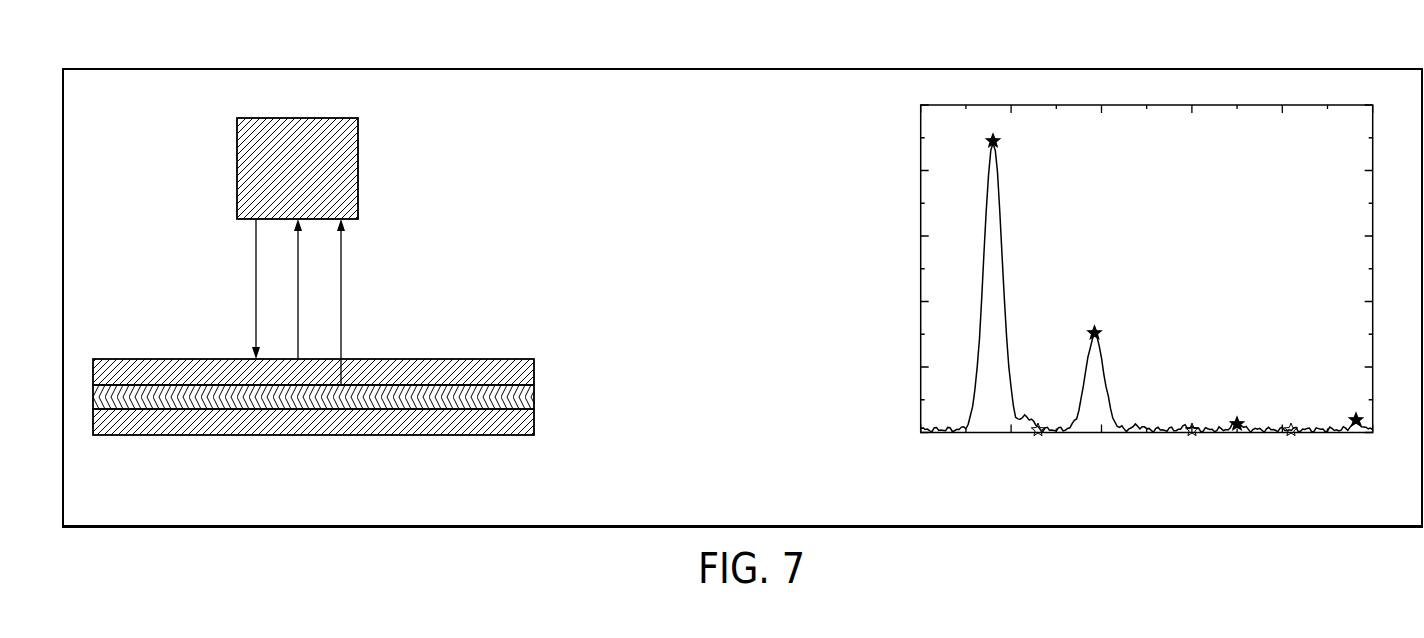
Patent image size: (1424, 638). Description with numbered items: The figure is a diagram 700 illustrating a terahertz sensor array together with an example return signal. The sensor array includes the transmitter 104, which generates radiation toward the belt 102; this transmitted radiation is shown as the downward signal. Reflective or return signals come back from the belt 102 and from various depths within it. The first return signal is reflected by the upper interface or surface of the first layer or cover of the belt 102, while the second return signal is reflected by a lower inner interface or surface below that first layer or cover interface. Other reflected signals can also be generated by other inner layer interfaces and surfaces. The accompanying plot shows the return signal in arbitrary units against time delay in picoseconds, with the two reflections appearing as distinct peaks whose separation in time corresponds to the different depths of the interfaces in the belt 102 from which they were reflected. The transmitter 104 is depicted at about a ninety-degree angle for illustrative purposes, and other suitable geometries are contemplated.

The measurement setup / system 700 is at (141, 43).
The transmitter 104 is at (226, 168).
The belt 102 is at (124, 341).